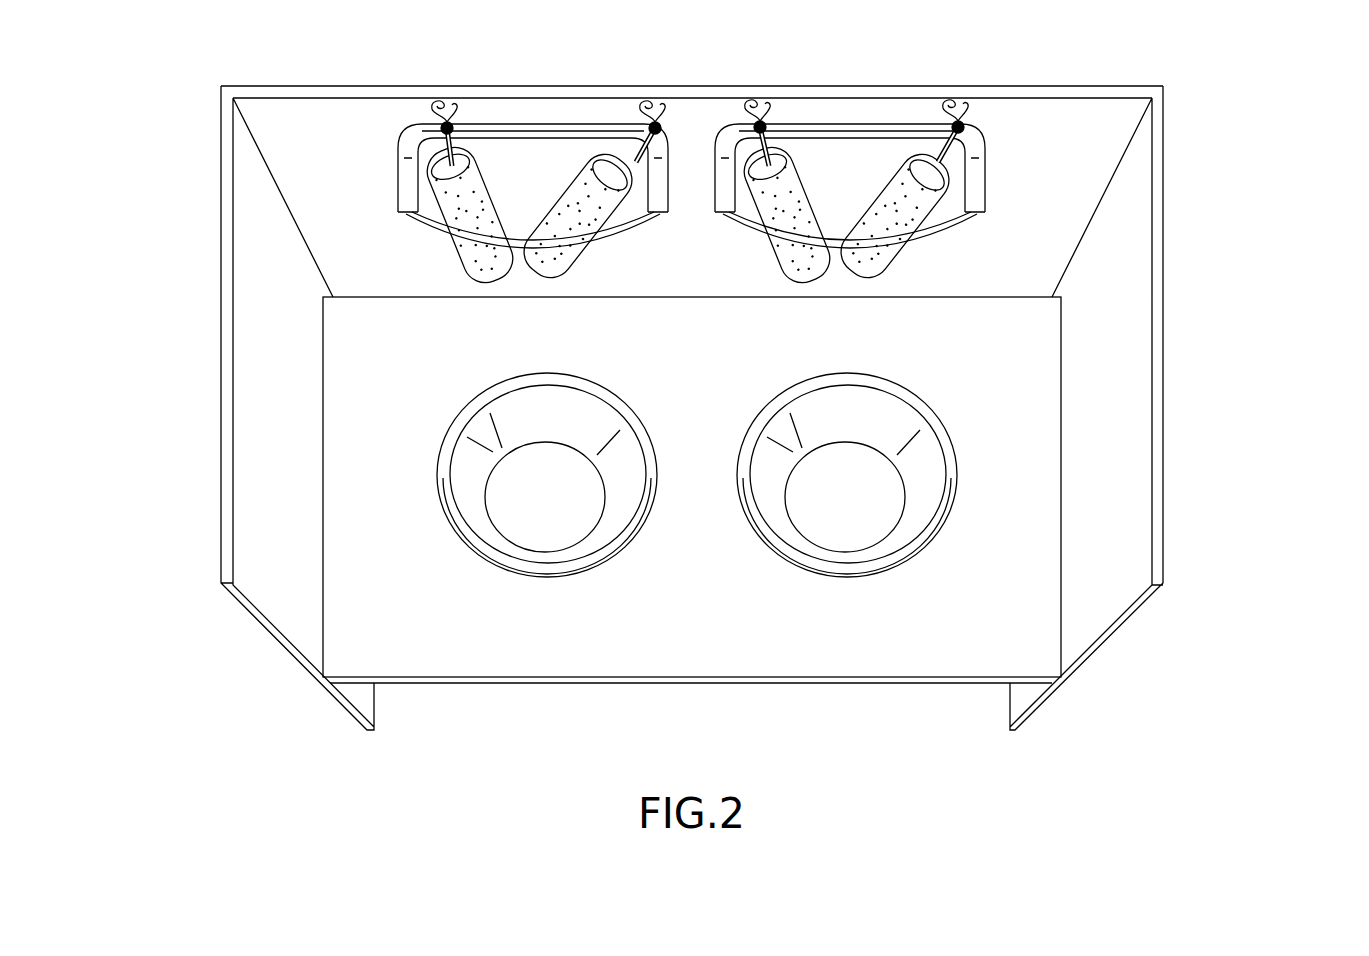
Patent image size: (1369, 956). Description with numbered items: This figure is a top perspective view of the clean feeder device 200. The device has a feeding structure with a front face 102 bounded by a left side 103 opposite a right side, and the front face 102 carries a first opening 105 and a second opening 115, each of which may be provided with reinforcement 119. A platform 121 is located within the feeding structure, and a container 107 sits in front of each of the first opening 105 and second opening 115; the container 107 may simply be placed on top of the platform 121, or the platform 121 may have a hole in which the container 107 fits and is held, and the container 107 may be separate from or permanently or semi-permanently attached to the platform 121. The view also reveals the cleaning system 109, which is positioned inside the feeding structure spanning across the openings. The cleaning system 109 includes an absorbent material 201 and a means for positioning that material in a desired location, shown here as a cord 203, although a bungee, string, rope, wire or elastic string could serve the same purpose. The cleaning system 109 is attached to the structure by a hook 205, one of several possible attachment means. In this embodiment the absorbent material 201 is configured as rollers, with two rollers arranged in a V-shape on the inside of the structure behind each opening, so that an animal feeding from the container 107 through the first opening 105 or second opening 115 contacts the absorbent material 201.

The front face 102 is at (828, 93).
The left side 103 is at (215, 372).
The first opening 105 is at (528, 166).
The container 107 is at (808, 510).
The cleaning system 109 is at (720, 206).
The second opening 115 is at (845, 165).
The reinforcement 119 is at (828, 135).
The platform 121 is at (927, 652).
The clean feeder device 200 is at (535, 745).
The absorbent material 201 is at (465, 215).
The cord 203 is at (450, 155).
The hook 205 is at (408, 122).